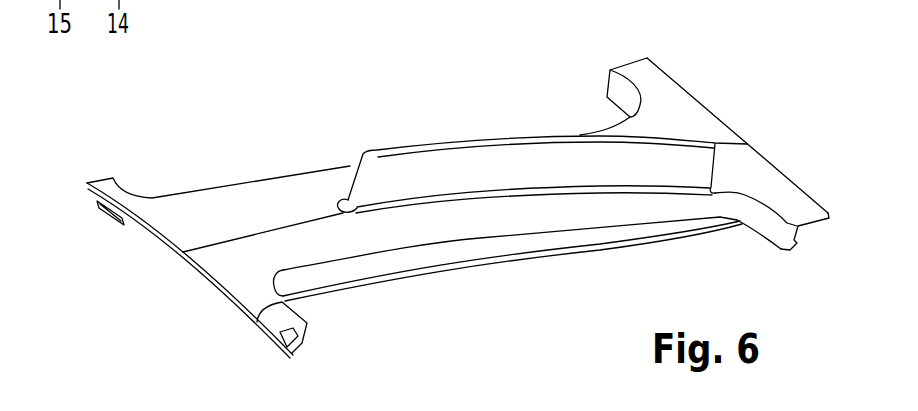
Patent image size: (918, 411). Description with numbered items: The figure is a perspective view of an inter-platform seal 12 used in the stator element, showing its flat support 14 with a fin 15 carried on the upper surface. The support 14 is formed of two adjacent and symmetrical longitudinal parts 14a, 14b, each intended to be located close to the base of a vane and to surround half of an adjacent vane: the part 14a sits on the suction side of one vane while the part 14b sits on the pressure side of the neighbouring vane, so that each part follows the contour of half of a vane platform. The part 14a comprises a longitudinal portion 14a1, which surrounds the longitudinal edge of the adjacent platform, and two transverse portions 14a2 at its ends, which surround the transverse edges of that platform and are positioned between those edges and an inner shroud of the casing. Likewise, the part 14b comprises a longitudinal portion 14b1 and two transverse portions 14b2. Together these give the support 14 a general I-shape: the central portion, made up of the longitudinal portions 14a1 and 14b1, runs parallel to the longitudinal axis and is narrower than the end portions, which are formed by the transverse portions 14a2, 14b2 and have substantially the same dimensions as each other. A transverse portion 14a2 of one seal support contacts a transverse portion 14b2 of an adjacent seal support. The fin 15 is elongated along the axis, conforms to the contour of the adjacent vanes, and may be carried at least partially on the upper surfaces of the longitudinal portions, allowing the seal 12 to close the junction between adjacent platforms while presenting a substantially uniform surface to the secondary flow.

The inter-platform seal 12 is at (493, 295).
The flat support 14 is at (170, 274).
The longitudinal part of the support 14a is at (184, 203).
The longitudinal portion 14a1 is at (285, 200).
The transverse portions 14a2 is at (115, 190).
The longitudinal part of the support 14b is at (333, 241).
The longitudinal portion 14b1 is at (523, 213).
The transverse portions 14b2 is at (277, 312).
The fin 15 is at (602, 163).